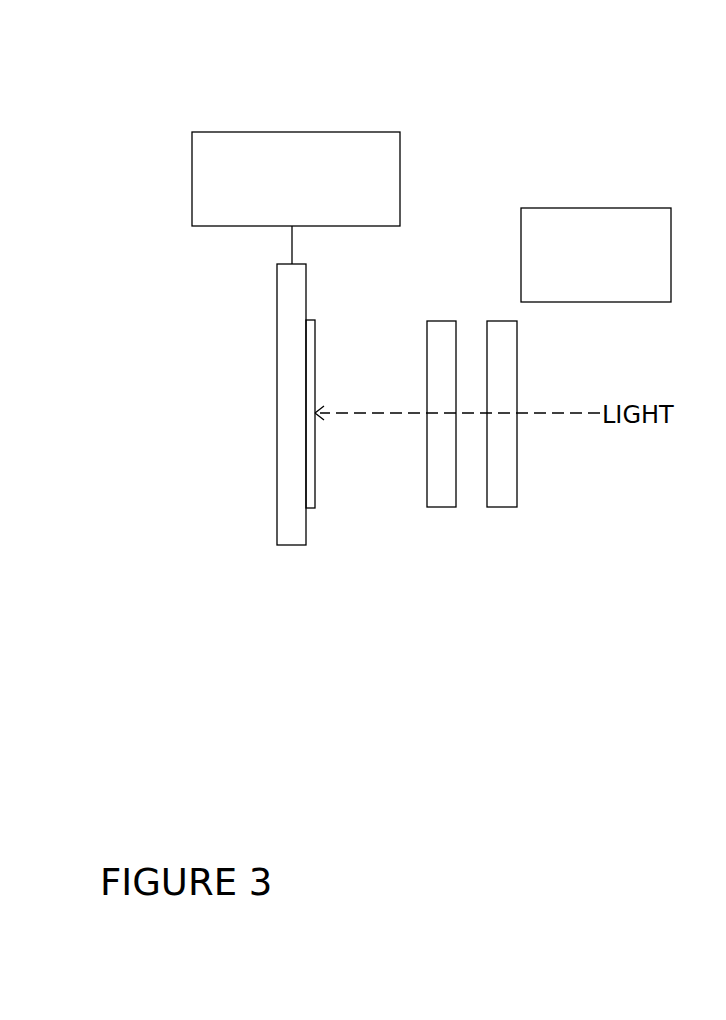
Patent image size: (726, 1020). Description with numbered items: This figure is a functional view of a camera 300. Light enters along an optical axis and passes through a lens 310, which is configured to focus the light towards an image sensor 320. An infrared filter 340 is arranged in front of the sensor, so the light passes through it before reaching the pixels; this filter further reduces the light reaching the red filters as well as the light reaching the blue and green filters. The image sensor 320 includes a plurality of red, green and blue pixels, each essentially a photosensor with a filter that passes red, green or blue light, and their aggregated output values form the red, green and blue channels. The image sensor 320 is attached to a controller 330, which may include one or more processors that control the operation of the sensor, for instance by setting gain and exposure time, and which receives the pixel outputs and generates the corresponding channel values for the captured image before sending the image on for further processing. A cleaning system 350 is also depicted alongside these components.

The camera 300 is at (200, 86).
The lens 310 is at (427, 490).
The image sensor 320 is at (317, 357).
The controller 330 is at (400, 172).
The infrared filter 340 is at (517, 490).
The cleaning system 350 is at (596, 208).